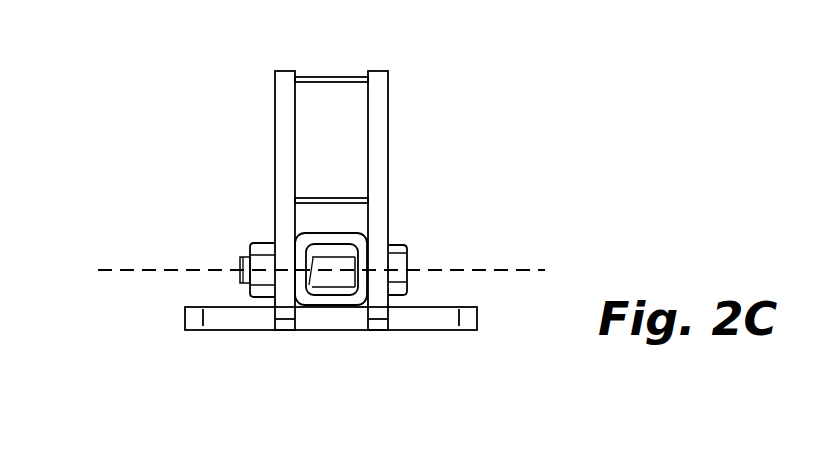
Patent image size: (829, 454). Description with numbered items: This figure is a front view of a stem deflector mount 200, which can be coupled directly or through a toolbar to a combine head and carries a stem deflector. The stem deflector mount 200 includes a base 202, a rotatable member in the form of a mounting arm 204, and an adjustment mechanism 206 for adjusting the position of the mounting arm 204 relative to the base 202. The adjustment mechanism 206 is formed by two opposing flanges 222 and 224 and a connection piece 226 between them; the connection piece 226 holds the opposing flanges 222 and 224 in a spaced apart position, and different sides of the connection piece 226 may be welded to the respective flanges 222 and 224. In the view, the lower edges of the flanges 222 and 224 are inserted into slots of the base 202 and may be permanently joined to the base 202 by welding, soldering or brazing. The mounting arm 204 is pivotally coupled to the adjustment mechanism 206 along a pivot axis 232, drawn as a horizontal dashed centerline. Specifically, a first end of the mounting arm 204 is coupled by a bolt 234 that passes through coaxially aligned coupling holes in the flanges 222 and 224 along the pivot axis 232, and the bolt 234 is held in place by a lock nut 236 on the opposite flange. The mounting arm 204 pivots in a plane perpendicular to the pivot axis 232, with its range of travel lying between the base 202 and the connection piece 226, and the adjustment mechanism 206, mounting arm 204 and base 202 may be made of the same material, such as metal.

The stem deflector mount 200 is at (572, 135).
The base 202 is at (242, 338).
The rotatable member 204 is at (337, 303).
The adjustment mechanism 206 is at (420, 91).
The first opposing flange 222 is at (275, 127).
The second opposing flange 224 is at (388, 128).
The connection piece 226 is at (328, 92).
The pivot axis 232 is at (132, 270).
The bolt 234 is at (398, 250).
The lock nut 236 is at (258, 248).